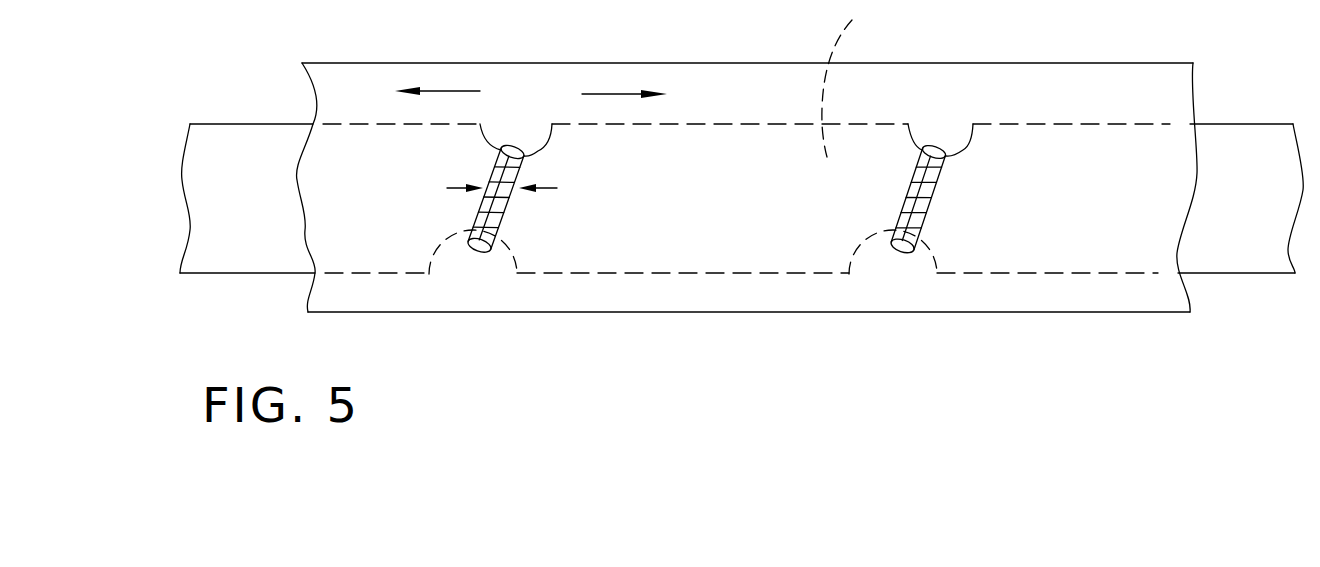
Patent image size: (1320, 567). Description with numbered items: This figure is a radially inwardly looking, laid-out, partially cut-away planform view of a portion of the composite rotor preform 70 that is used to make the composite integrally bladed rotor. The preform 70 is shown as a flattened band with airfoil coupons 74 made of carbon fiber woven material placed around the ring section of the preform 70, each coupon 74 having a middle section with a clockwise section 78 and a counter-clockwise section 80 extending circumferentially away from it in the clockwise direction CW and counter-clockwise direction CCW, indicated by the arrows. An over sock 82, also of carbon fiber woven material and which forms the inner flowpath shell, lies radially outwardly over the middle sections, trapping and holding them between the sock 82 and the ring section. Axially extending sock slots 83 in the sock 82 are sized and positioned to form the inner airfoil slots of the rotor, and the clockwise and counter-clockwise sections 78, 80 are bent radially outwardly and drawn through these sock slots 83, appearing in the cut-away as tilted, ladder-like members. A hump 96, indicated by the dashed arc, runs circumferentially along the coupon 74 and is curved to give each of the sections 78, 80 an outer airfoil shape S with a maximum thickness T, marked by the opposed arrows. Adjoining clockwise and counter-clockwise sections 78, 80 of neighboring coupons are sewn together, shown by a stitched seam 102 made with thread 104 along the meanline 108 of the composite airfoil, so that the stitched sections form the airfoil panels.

The composite rotor preform 70 is at (704, 56).
The airfoil coupon 74 is at (1237, 124).
The clockwise section 78 is at (502, 160).
The counter-clockwise section 80 is at (497, 235).
The over sock 82 is at (816, 313).
The sock slot 83 is at (510, 203).
The hump 96 is at (862, 17).
The stitched seam 102 is at (477, 230).
The thread 104 is at (512, 173).
The meanline 108 is at (488, 251).
The maximum thickness T is at (453, 188).
The airfoil shape S is at (507, 215).
The clockwise direction CW is at (610, 94).
The counter-clockwise direction CCW is at (450, 91).